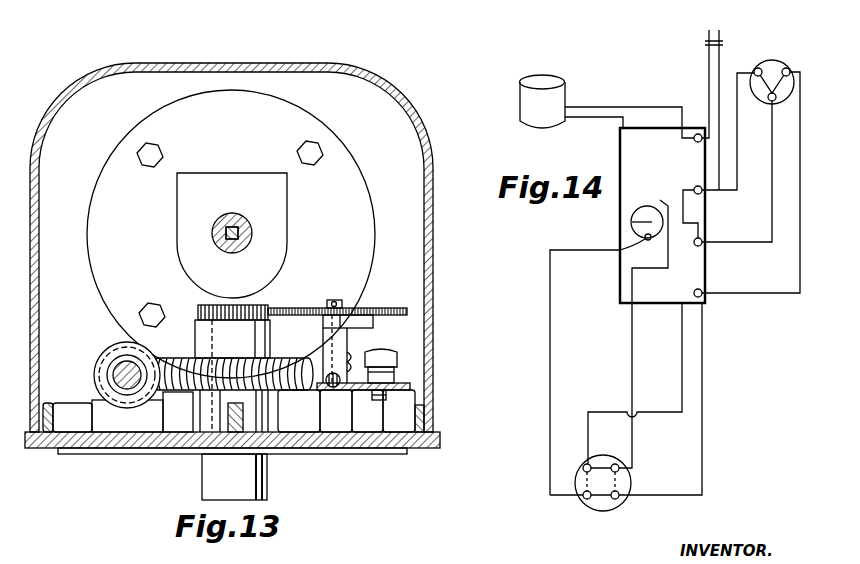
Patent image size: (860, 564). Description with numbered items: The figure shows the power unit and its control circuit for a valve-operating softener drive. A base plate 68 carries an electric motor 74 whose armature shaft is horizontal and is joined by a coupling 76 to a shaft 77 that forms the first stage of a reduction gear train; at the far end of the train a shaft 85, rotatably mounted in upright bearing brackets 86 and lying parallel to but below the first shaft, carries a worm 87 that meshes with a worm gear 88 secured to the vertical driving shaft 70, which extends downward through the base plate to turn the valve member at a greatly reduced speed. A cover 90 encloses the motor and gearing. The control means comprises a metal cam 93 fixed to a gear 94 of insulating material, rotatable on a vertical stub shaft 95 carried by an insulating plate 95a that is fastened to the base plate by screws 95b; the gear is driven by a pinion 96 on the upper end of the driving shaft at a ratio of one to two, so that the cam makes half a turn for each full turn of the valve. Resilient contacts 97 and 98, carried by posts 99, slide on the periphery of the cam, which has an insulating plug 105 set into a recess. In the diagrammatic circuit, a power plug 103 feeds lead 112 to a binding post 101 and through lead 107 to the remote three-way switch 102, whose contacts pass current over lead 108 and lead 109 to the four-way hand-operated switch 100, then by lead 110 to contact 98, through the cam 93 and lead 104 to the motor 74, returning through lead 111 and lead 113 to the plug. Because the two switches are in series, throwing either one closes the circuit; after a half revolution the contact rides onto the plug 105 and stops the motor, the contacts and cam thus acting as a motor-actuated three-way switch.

In FIG. 13, the base plate 68 is at (100, 446).
In FIG. 13, the vertical driving shaft 70 is at (204, 472).
In FIG. 13, the electric motor 74 is at (366, 181).
In FIG. 14, the electric motor 74 is at (560, 92).
In FIG. 13, the coupling 76 is at (236, 223).
In FIG. 13, the shaft 77 is at (240, 241).
In FIG. 13, the shaft 85 is at (118, 376).
In FIG. 13, the upright bearing brackets 86 is at (98, 408).
In FIG. 13, the worm 87 is at (111, 348).
In FIG. 13, the worm gear 88 is at (294, 392).
In FIG. 13, the cover 90 is at (384, 97).
In FIG. 13, the cam 93 is at (316, 326).
In FIG. 14, the cam 93 is at (646, 212).
In FIG. 13, the gear 94 is at (375, 306).
In FIG. 13, the stub shaft 95 is at (334, 301).
In FIG. 13, the insulating plate 95a is at (367, 411).
In FIG. 13, the screws 95b is at (336, 411).
In FIG. 13, the pinion 96 is at (256, 306).
In FIG. 14, the resilient contact 97 is at (648, 242).
In FIG. 13, the resilient contact 98 is at (362, 325).
In FIG. 14, the resilient contact 98 is at (658, 204).
In FIG. 13, the posts 99 is at (340, 355).
In FIG. 14, the four-way hand-operated switch 100 is at (595, 505).
In FIG. 13, the binding posts 101 is at (386, 365).
In FIG. 14, the binding posts 101 is at (698, 134).
In FIG. 14, the three-way switch 102 is at (768, 60).
In FIG. 14, the power plug 103 is at (705, 42).
In FIG. 14, the lead 104 is at (622, 176).
In FIG. 14, the insulating plug 105 is at (620, 247).
In FIG. 14, the lead 107 is at (800, 207).
In FIG. 14, the lead 108 is at (738, 160).
In FIG. 14, the lead 109 is at (684, 383).
In FIG. 14, the lead 110 is at (633, 380).
In FIG. 14, the lead 111 is at (586, 106).
In FIG. 14, the lead 112 is at (709, 90).
In FIG. 14, the lead 113 is at (719, 70).